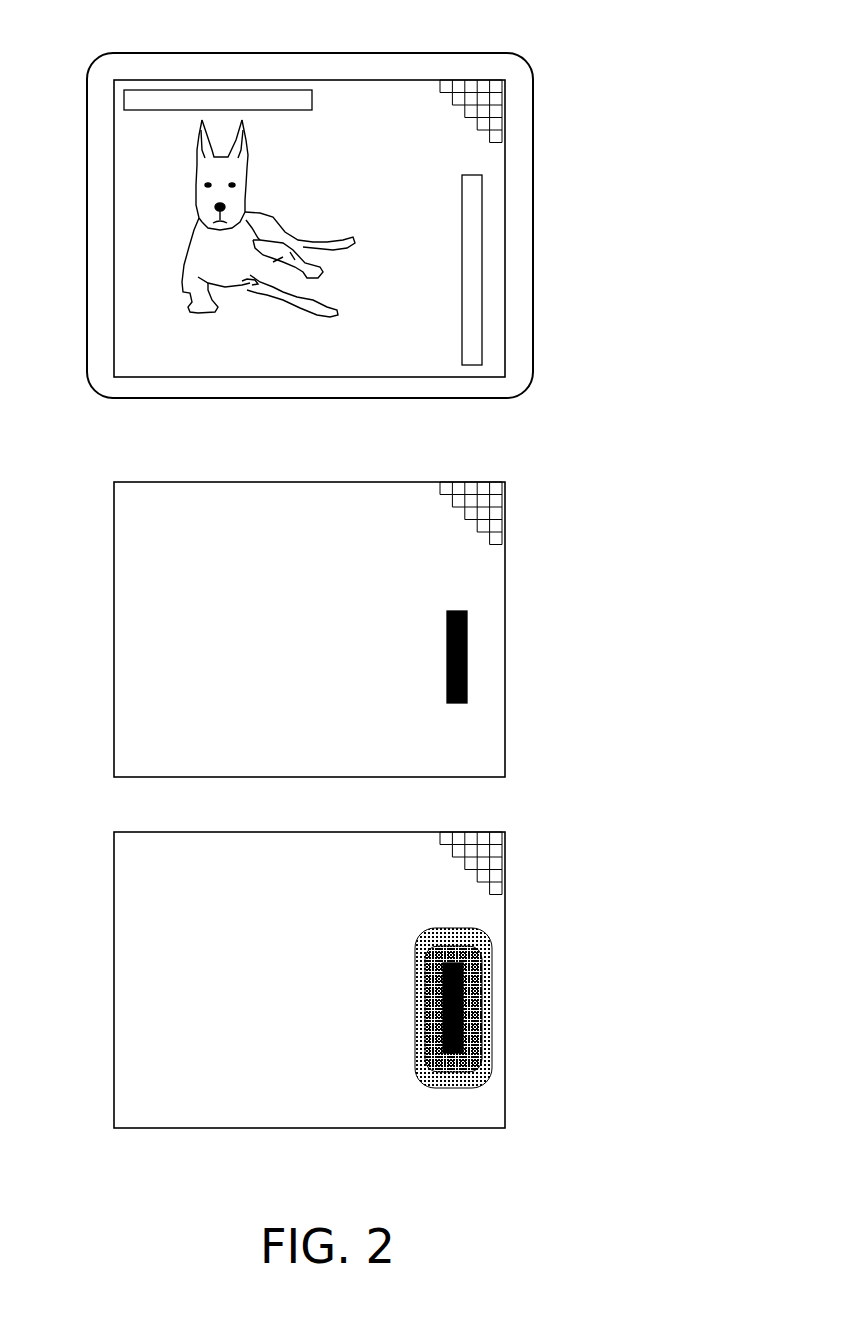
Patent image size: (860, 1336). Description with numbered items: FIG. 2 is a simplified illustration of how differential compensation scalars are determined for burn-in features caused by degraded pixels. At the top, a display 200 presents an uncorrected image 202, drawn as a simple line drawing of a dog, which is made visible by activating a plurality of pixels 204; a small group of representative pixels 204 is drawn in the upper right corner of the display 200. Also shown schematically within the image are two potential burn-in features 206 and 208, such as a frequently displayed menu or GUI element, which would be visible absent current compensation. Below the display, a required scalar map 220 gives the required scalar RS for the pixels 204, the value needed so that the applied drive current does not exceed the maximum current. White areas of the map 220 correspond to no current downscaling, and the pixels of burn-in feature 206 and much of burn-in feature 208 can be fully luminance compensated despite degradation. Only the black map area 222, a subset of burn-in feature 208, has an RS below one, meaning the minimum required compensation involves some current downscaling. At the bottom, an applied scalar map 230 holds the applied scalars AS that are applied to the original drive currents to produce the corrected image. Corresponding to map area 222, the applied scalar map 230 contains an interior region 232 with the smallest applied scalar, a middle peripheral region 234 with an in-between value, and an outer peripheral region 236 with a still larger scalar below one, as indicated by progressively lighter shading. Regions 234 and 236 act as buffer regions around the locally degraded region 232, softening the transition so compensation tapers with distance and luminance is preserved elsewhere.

The display 200 is at (180, 53).
The uncorrected image 202 is at (122, 156).
The pixels 204 is at (453, 102).
The burn-in feature 206 is at (312, 100).
The burn-in feature 208 is at (462, 178).
The required scalar map 220 is at (290, 764).
The map area 222 is at (445, 642).
The applied scalar map 230 is at (287, 1112).
The interior region 232 is at (447, 1028).
The middle peripheral region 234 is at (427, 990).
The outer peripheral region 236 is at (417, 938).